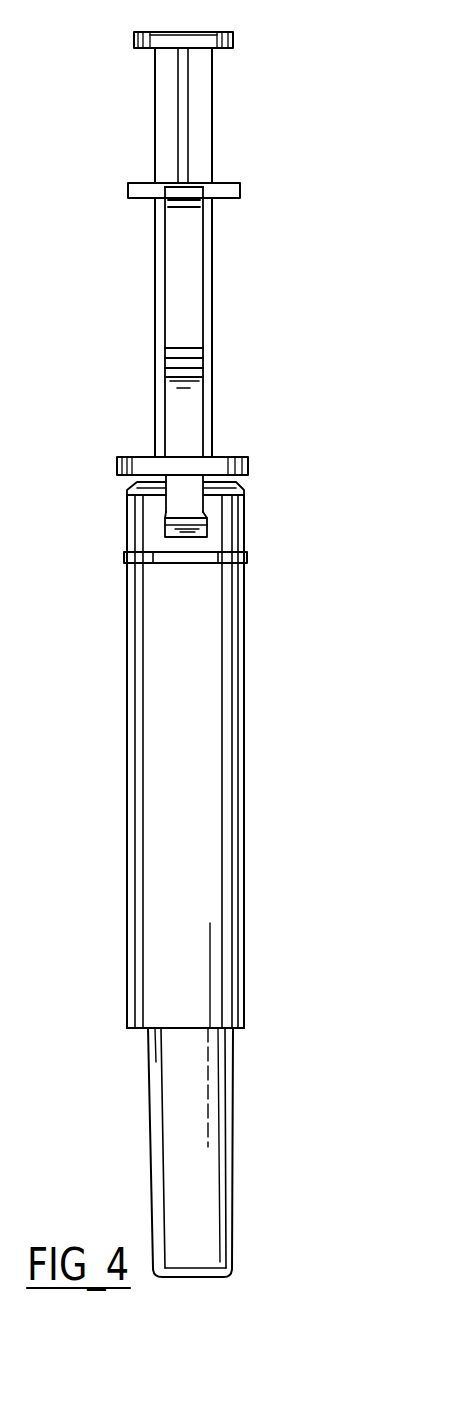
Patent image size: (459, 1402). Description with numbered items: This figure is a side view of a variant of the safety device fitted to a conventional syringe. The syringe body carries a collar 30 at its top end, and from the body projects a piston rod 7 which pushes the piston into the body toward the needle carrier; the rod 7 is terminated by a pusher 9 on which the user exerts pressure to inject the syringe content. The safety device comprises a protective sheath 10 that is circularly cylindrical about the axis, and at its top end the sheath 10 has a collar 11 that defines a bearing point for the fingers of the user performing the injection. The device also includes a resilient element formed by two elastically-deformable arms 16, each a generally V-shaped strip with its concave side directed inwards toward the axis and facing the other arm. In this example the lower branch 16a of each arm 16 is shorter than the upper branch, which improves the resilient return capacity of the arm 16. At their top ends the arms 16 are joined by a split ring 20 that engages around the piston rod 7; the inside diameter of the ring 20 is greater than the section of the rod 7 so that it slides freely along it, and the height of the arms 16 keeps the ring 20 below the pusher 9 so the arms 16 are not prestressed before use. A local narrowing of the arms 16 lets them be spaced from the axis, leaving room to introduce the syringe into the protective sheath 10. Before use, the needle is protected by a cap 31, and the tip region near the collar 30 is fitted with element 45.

The pusher 9 is at (200, 40).
The piston rod 7 is at (198, 107).
The split ring 20 is at (223, 193).
The elastically-deformable arms 16 is at (185, 298).
The lower branch 16a is at (188, 432).
The collar 30 is at (250, 468).
The tip cap 45 is at (177, 500).
The collar 11 is at (197, 560).
The protective sheath 10 is at (203, 763).
The cap 31 is at (193, 1163).